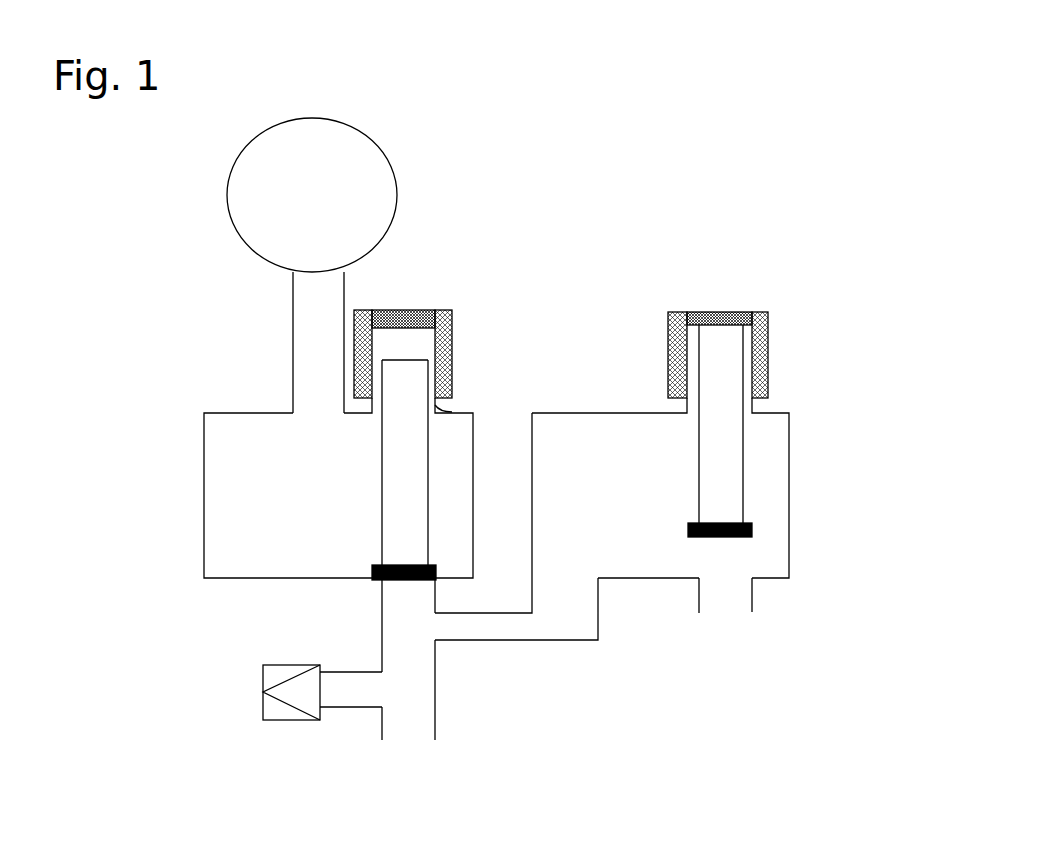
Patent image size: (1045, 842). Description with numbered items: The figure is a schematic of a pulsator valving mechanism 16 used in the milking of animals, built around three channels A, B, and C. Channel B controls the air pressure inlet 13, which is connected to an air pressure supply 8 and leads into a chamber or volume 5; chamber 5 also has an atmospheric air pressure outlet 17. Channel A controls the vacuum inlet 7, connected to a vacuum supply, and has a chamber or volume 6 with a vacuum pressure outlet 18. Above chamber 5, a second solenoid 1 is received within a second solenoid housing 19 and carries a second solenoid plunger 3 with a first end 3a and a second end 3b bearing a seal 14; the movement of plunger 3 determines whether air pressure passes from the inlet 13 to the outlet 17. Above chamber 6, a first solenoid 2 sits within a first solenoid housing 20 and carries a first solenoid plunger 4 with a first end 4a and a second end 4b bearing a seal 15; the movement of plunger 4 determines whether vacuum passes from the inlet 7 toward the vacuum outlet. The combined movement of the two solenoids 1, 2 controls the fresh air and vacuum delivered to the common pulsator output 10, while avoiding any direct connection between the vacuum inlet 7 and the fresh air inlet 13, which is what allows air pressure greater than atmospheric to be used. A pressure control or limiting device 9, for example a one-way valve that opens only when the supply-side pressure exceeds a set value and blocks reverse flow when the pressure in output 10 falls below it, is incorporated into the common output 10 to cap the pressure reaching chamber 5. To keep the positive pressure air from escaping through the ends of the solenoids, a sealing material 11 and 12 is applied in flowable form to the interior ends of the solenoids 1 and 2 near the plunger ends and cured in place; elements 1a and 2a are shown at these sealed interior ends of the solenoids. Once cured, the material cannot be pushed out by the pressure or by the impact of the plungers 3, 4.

The second solenoid 1 is at (453, 332).
The first seal member 1a is at (412, 322).
The first solenoid 2 is at (768, 345).
The second seal member 2a is at (728, 328).
The second solenoid plunger 3 is at (404, 460).
The first end of second solenoid plunger 3a is at (405, 360).
The second end of second solenoid plunger 3b is at (400, 565).
The first solenoid plunger 4 is at (727, 460).
The first end of first solenoid plunger 4a is at (718, 328).
The second end of first solenoid plunger 4b is at (718, 523).
The chamber 5 is at (243, 513).
The chamber 6 is at (768, 502).
The vacuum inlet 7 is at (735, 603).
The air pressure supply 8 is at (353, 222).
The pressure control or limiting device 9 is at (292, 688).
The common pulsator output 10 is at (403, 728).
The sealing material 11 is at (410, 310).
The sealing material 12 is at (727, 328).
The air pressure inlet 13 is at (300, 363).
The seal 14 is at (372, 582).
The seal 15 is at (752, 537).
The pulsator valving mechanism 16 is at (113, 233).
The atmospheric air pressure outlet 17 is at (400, 637).
The vacuum pressure outlet 18 is at (577, 612).
The second solenoid housing 19 is at (452, 412).
The first solenoid housing 20 is at (687, 410).
The channel A is at (792, 513).
The channel B is at (204, 548).
The channel C is at (514, 640).